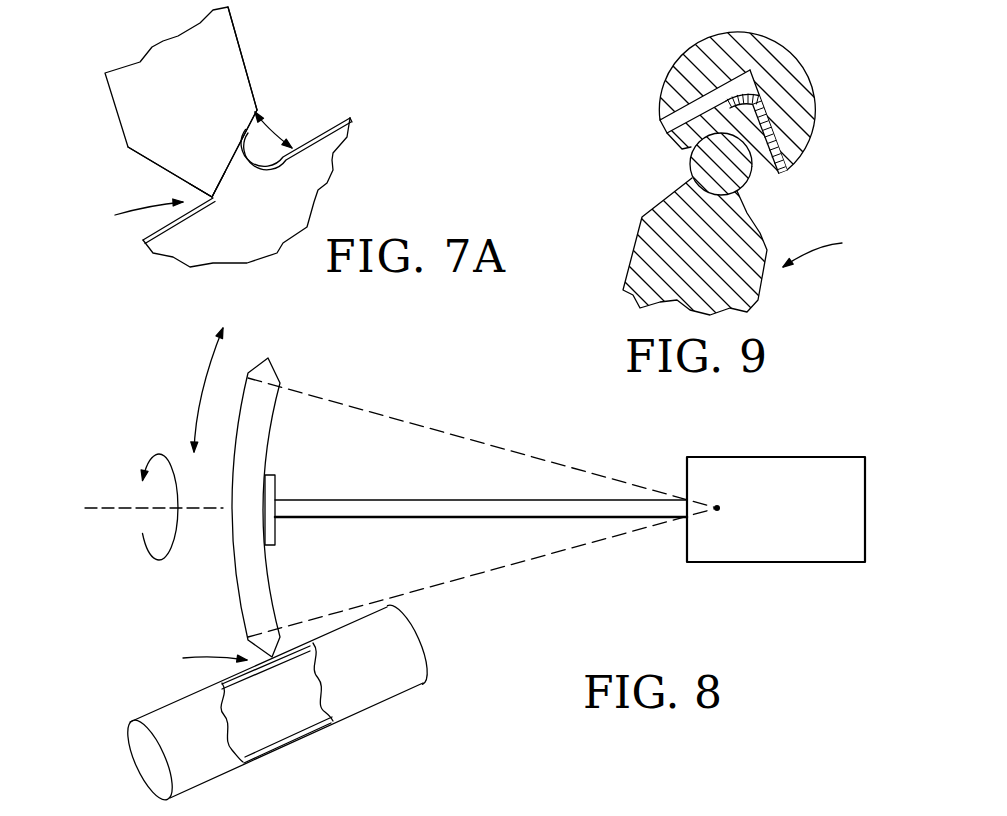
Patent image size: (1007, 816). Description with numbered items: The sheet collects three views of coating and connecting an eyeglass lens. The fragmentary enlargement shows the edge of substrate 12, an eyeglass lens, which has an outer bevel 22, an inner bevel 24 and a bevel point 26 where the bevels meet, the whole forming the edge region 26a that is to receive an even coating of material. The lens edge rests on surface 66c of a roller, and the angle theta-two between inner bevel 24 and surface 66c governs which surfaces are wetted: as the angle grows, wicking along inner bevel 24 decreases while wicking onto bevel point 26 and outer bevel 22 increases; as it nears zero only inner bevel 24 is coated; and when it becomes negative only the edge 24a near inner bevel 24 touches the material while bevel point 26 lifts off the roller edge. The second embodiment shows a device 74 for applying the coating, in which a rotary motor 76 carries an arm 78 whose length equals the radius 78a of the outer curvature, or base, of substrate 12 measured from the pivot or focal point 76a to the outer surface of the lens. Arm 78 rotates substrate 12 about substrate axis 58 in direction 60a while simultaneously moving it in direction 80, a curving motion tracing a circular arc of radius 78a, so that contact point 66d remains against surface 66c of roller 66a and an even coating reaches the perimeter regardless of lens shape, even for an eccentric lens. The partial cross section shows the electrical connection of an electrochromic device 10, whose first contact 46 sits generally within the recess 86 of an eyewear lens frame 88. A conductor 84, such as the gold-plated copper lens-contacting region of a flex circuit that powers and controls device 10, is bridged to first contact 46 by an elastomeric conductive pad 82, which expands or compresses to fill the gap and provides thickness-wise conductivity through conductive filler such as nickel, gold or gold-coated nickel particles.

In FIG. 9, the electrochromic device 10 is at (688, 245).
In FIG. 7A, the substrate 12 is at (167, 68).
In FIG. 7A, the outer bevel 22 is at (150, 159).
In FIG. 7A, the inner bevel 24 is at (237, 145).
In FIG. 7A, the edge 24a is at (303, 30).
In FIG. 7A, the bevel point 26 is at (212, 197).
In FIG. 7A, the edge region 26a is at (105, 224).
In FIG. 8, the edge region 26a is at (172, 669).
In FIG. 9, the first contact 46 is at (753, 187).
In FIG. 8, the substrate axis 58 is at (122, 508).
In FIG. 8, the direction 60a is at (157, 454).
In FIG. 8, the roller 66a is at (395, 700).
In FIG. 7A, the surface 66c is at (361, 88).
In FIG. 8, the surface 66c is at (327, 630).
In FIG. 7A, the contact point 66d is at (217, 200).
In FIG. 8, the contact point 66d is at (272, 660).
In FIG. 8, the device 74 is at (390, 407).
In FIG. 8, the rotary motor 76 is at (775, 457).
In FIG. 8, the focal point 76a is at (718, 512).
In FIG. 8, the arm 78 is at (313, 500).
In FIG. 8, the radius 78a is at (565, 465).
In FIG. 8, the direction 80 is at (197, 388).
In FIG. 9, the conductive pad 82 is at (680, 147).
In FIG. 9, the conductor 84 is at (663, 132).
In FIG. 9, the recess 86 is at (772, 117).
In FIG. 9, the eyewear lens frame 88 is at (700, 43).